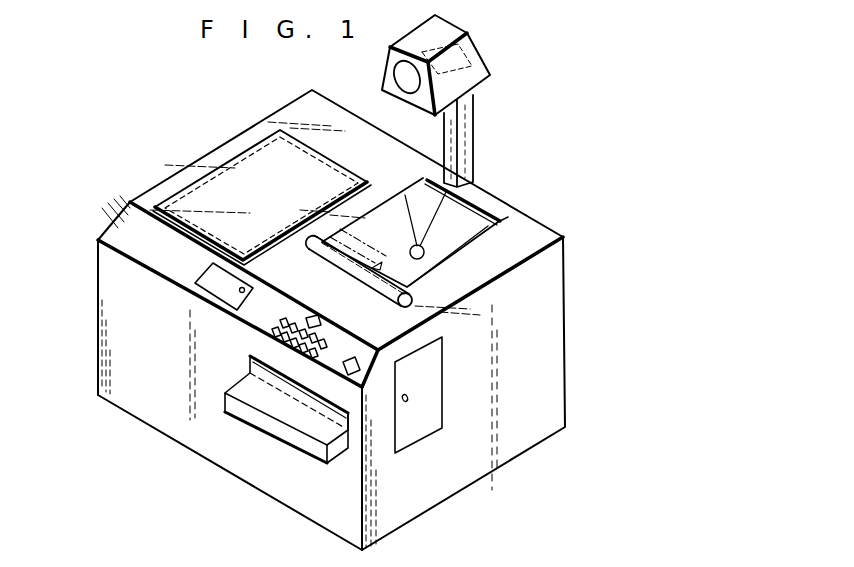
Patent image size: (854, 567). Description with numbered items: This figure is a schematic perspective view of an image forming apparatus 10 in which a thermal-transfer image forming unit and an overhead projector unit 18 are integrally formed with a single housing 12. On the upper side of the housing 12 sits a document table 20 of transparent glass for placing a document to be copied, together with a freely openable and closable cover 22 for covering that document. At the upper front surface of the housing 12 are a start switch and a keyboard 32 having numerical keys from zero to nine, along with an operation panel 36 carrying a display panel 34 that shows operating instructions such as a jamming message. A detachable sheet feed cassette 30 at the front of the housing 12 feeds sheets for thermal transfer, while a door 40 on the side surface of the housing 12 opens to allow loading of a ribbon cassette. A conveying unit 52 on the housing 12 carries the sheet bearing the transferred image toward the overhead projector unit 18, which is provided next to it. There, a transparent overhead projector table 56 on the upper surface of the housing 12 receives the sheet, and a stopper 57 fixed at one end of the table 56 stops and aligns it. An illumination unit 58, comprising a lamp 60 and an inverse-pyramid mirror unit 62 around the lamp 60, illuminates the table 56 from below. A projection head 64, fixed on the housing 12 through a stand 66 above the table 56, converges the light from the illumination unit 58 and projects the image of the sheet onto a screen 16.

The image forming apparatus 10 is at (83, 187).
The housing 12 is at (560, 390).
The screen 16 is at (97, 278).
The overhead projector unit 18 is at (533, 140).
The document table 20 is at (227, 183).
The cover 22 is at (178, 205).
The sheet feed cassette 30 is at (292, 440).
The keyboard 32 is at (280, 335).
The display panel 34 is at (208, 278).
The operation panel 36 is at (137, 252).
The door 40 is at (427, 427).
The conveying unit 52 is at (397, 292).
The overhead projector table 56 is at (407, 202).
The stopper 57 is at (517, 205).
The illumination unit 58 is at (465, 220).
The lamp 60 is at (425, 250).
The mirror unit 62 is at (453, 238).
The projection head 64 is at (498, 60).
The stand 66 is at (467, 133).